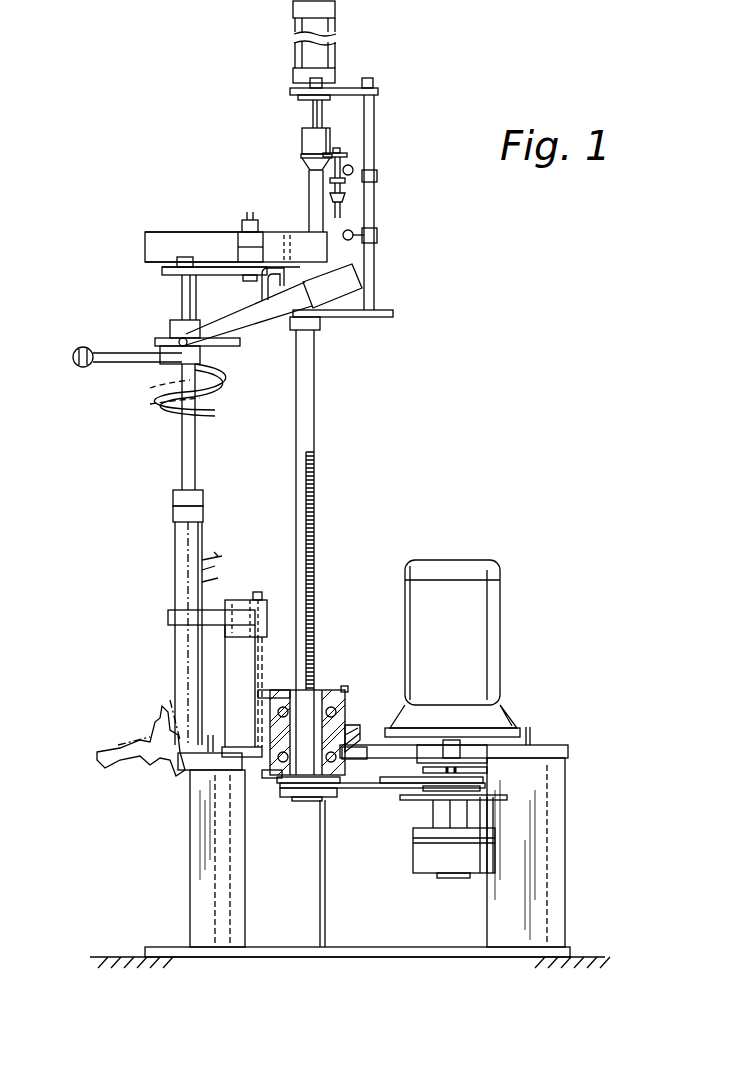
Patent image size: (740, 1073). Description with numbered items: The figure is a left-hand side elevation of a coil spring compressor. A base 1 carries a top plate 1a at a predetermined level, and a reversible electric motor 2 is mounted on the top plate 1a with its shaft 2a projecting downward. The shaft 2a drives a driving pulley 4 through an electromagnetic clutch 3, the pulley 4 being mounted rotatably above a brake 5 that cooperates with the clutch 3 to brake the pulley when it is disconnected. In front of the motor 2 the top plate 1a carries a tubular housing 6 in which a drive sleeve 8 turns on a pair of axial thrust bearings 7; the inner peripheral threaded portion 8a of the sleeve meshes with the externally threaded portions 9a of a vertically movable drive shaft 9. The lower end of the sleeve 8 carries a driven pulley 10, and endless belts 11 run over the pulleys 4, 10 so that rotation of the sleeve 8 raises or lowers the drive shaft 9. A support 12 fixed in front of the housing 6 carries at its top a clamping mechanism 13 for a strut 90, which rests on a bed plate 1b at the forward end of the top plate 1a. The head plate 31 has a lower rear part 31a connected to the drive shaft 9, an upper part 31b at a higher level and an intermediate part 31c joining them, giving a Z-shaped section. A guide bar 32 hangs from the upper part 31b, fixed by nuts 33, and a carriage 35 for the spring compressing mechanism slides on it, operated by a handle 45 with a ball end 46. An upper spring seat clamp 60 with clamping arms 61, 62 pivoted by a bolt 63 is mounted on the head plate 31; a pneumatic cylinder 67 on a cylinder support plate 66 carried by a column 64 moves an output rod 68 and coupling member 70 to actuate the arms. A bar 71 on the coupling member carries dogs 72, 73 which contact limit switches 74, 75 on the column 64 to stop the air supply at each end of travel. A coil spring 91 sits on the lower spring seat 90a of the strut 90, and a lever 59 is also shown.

The base 1 is at (552, 912).
The top plate 1a is at (540, 745).
The bed plate 1b is at (185, 772).
The electric motor 2 is at (500, 660).
The motor shaft 2a is at (500, 758).
The electromagnetic clutch 3 is at (455, 753).
The driving pulley 4 is at (470, 792).
The brake 5 is at (490, 862).
The tubular housing 6 is at (357, 740).
The axial thrust bearings 7 is at (350, 720).
The drive sleeve 8 is at (325, 688).
The inner peripheral threaded portion 8a is at (262, 690).
The drive shaft 9 is at (296, 478).
The externally threaded portions 9a is at (316, 540).
The driven pulley 10 is at (292, 802).
The endless belts 11 is at (352, 790).
The support 12 is at (232, 652).
The clamping mechanism 13 is at (232, 598).
The head plate 31 is at (222, 262).
The lower rear part 31a is at (370, 317).
The upper part 31b is at (160, 270).
The intermediate part 31c is at (262, 288).
The guide bar 32 is at (180, 302).
The nuts 33 is at (185, 256).
The carriage 35 is at (168, 340).
The handle 45 is at (118, 364).
The ball end 46 is at (78, 367).
The lever arm 59 is at (352, 280).
The upper spring seat clamp 60 is at (143, 240).
The clamping arm 61 is at (190, 232).
The clamping arm 62 is at (327, 233).
The bolt 63 is at (250, 220).
The column 64 is at (374, 120).
The cylinder support plate 66 is at (345, 88).
The pneumatic cylinder 67 is at (335, 52).
The output rod 68 is at (318, 110).
The coupling member 70 is at (305, 135).
The bar 71 is at (352, 168).
The dog 72 is at (306, 162).
The dog 73 is at (318, 188).
The limit switch 74 is at (377, 178).
The limit switch 75 is at (377, 238).
The strut 90 is at (178, 530).
The lower spring seat 90a is at (205, 572).
The coil spring 91 is at (212, 412).